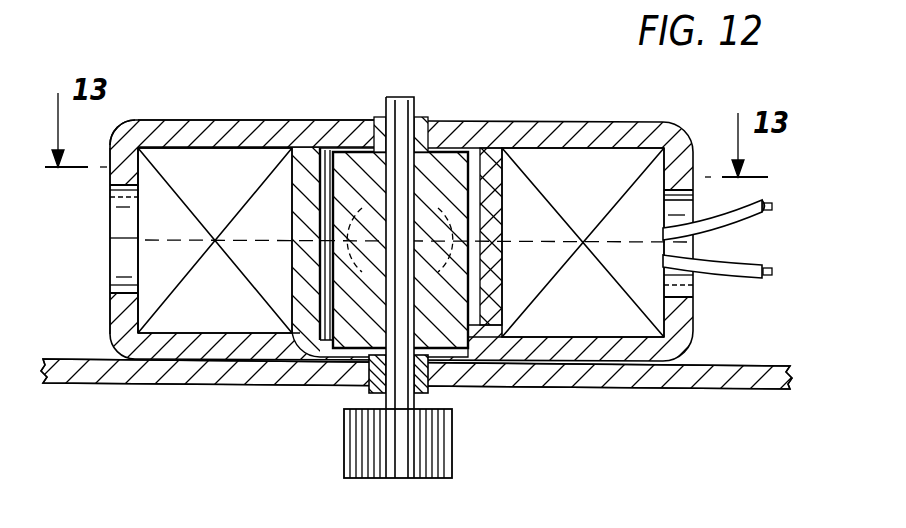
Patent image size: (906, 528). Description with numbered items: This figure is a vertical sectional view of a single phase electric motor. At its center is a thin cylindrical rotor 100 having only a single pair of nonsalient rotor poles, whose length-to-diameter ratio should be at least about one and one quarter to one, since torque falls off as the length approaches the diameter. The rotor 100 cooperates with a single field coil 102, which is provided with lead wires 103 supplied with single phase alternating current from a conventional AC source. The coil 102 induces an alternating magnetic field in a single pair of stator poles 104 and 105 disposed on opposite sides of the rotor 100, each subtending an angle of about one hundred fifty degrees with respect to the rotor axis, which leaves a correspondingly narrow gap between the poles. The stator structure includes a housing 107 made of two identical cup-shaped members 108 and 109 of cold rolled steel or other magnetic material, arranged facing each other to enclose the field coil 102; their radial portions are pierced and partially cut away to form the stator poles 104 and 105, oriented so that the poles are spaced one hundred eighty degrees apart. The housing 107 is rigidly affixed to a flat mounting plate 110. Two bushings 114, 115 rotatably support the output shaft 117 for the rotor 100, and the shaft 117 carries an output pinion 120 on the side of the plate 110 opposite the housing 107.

The rotor 100 is at (427, 207).
The field coil 102 is at (585, 160).
The lead wires 103 is at (717, 268).
The stator pole 104 is at (298, 226).
The stator pole 105 is at (497, 214).
The housing 107 is at (118, 116).
The cup-shaped member 108 is at (112, 323).
The cup-shaped member 109 is at (135, 119).
The mounting plate 110 is at (757, 387).
The bushing 114 is at (416, 117).
The nut 115 is at (370, 363).
The output shaft 117 is at (391, 96).
The output pinion 120 is at (446, 476).